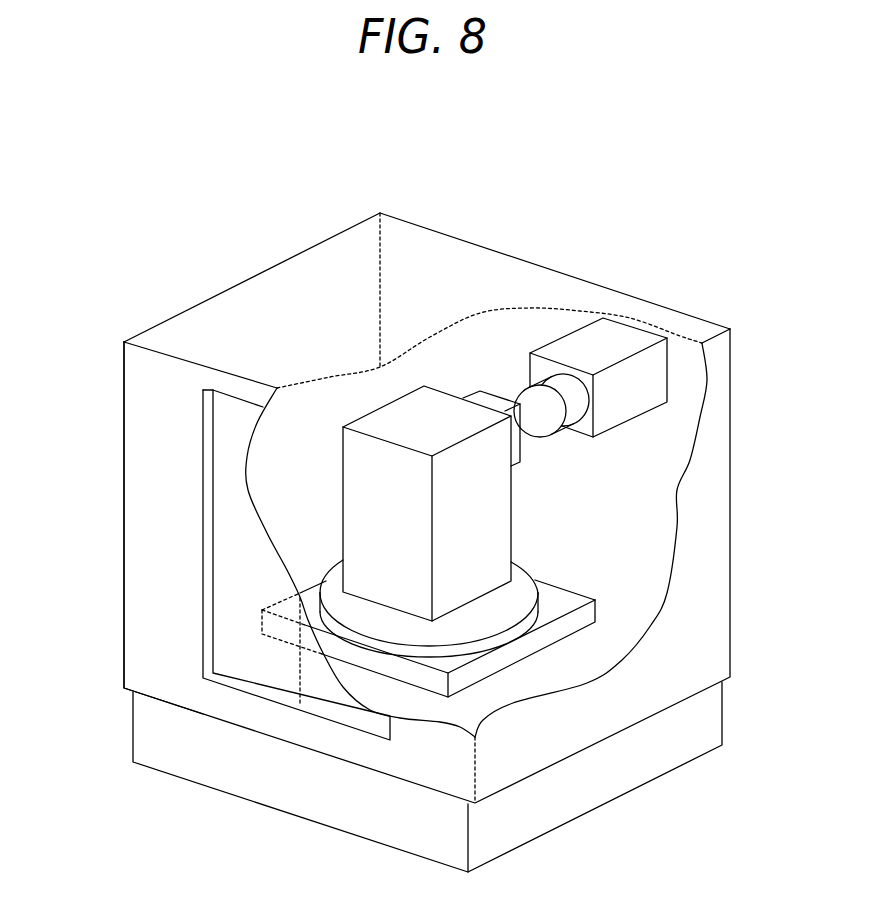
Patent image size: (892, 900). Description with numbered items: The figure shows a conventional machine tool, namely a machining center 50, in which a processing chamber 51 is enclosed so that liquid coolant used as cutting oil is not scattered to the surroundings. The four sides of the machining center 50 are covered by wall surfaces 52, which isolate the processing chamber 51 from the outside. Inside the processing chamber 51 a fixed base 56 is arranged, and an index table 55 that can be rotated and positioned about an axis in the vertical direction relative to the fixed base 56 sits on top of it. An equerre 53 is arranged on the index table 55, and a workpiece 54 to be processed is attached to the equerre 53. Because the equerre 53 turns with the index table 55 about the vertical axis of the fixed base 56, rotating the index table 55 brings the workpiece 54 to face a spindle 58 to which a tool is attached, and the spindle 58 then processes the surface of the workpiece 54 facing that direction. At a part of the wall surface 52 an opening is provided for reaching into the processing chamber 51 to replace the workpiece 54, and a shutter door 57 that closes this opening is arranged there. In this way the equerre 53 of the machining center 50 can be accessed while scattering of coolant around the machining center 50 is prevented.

The machining center 50 is at (461, 225).
The processing chamber 51 is at (490, 265).
The wall surface 52 is at (140, 382).
The equerre 53 is at (380, 433).
The workpiece 54 is at (523, 447).
The index table 55 is at (517, 598).
The fixed base 56 is at (542, 638).
The shutter door 57 is at (242, 600).
The spindle 58 is at (602, 355).